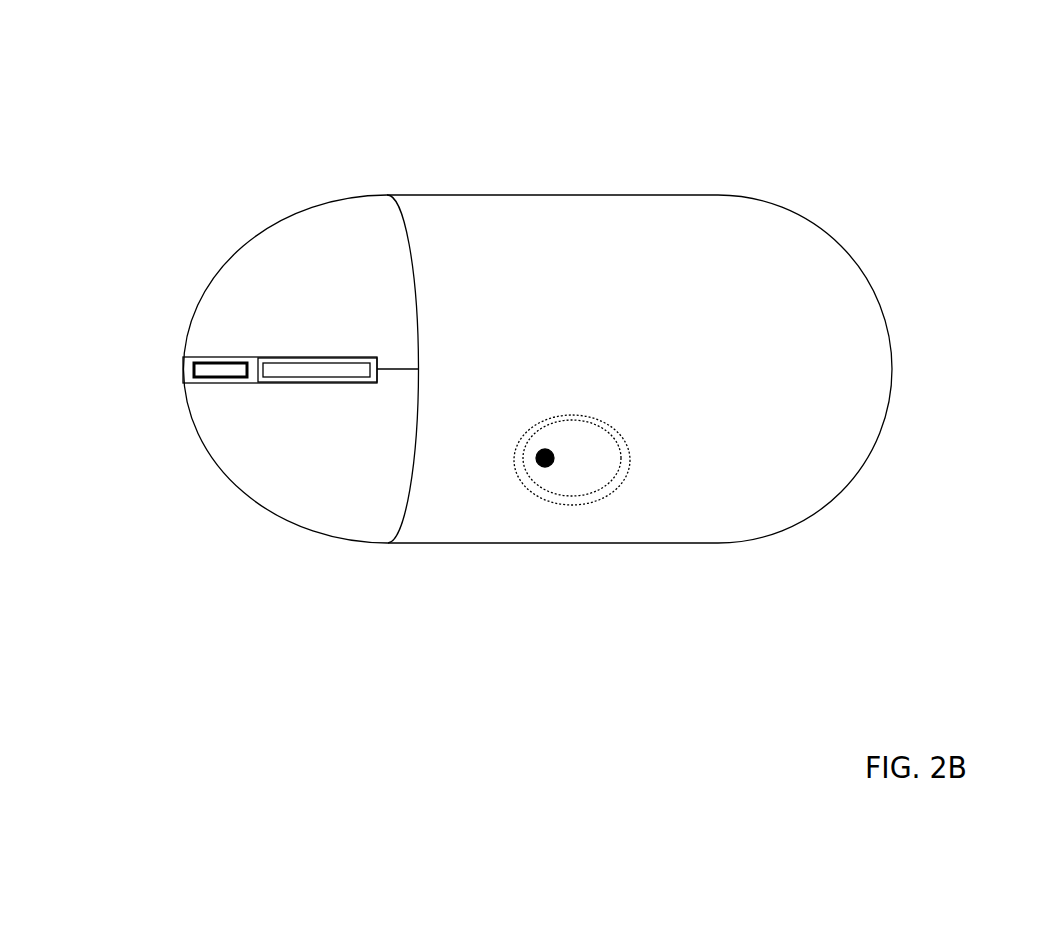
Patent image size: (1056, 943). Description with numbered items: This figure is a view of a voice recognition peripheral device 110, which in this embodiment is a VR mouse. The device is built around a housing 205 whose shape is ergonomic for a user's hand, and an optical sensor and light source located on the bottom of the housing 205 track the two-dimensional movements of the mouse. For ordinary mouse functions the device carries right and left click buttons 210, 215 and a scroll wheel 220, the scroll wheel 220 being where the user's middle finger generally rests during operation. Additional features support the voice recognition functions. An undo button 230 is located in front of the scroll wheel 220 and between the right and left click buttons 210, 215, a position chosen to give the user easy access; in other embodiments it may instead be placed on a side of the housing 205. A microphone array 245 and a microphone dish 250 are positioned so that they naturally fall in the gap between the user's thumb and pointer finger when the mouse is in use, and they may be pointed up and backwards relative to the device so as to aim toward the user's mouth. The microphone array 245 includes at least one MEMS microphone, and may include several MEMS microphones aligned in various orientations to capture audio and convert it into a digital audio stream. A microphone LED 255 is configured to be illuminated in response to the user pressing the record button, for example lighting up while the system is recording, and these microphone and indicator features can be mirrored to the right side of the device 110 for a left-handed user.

The voice recognition peripheral device 110 is at (884, 171).
The housing 205 is at (893, 365).
The right click button 210 is at (230, 282).
The left click button 215 is at (245, 463).
The scroll wheel 220 is at (332, 370).
The undo button 230 is at (193, 380).
The microphone array 245 is at (547, 450).
The microphone dish 250 is at (607, 467).
The microphone LED 255 is at (547, 423).